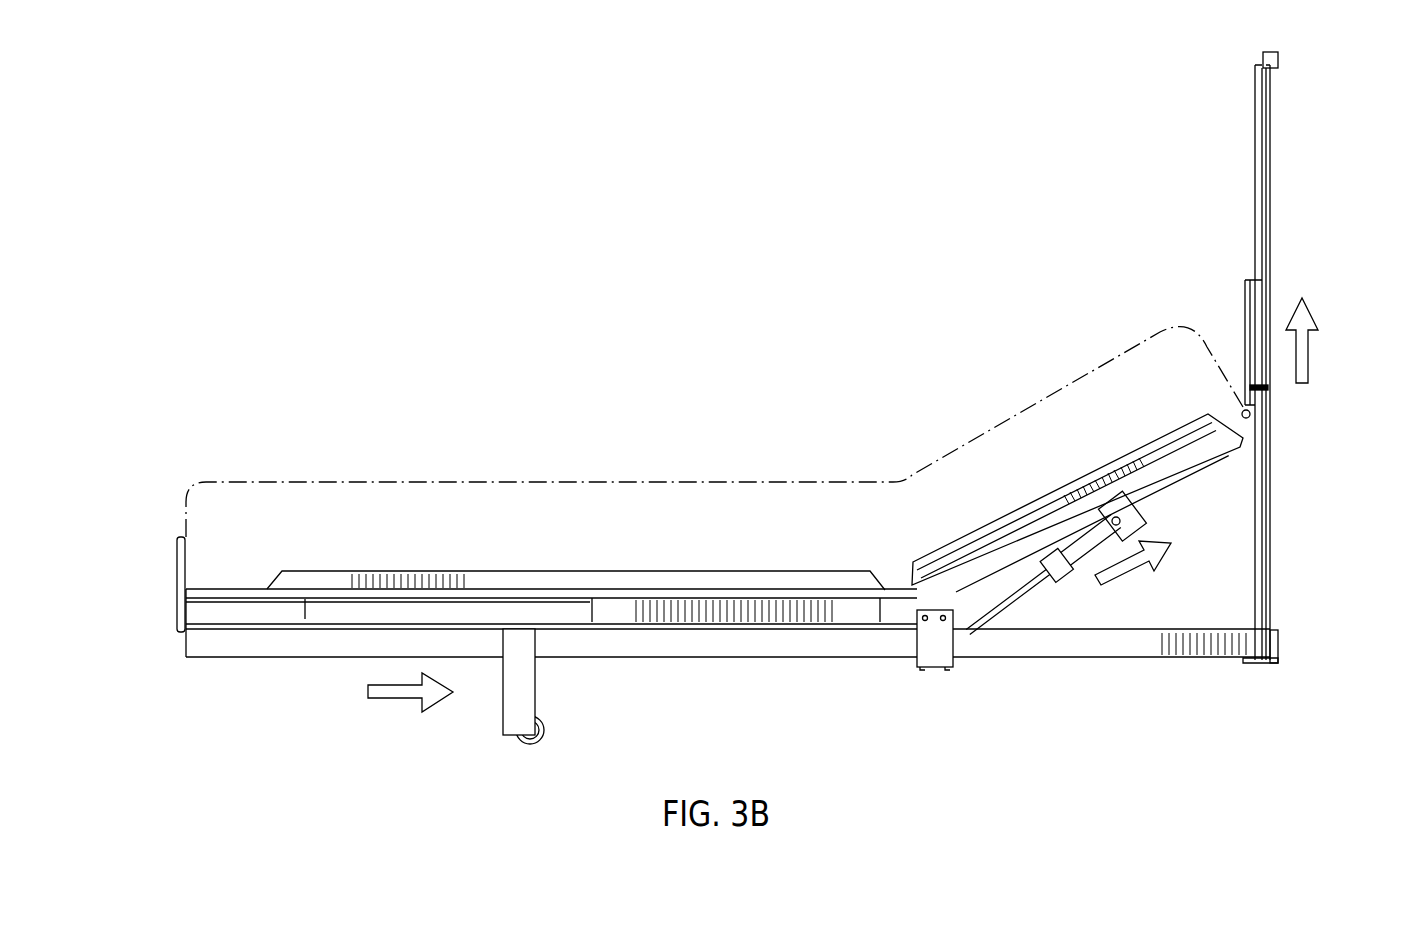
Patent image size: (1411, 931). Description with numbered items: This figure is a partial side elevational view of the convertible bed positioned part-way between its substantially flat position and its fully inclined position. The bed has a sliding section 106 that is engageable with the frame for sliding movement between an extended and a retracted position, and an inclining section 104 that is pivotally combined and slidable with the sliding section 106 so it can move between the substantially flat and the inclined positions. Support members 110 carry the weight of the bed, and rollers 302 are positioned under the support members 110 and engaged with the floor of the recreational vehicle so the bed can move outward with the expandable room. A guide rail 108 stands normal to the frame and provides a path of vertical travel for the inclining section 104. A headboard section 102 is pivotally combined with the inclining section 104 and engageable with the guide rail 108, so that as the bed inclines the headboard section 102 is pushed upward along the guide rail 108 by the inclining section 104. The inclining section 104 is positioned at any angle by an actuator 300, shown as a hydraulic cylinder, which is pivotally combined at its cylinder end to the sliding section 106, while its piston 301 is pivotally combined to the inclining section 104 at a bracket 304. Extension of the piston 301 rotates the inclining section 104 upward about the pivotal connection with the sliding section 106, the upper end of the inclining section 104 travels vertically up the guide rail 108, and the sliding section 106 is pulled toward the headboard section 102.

The headboard section 102 is at (1254, 287).
The inclining section 104 is at (1196, 437).
The sliding section 106 is at (296, 600).
The guide rail 108 is at (1258, 154).
The support member 110 is at (828, 654).
The actuator 300 is at (1007, 600).
The piston 301 is at (1097, 583).
The roller 302 is at (516, 740).
The bracket 304 is at (1128, 513).